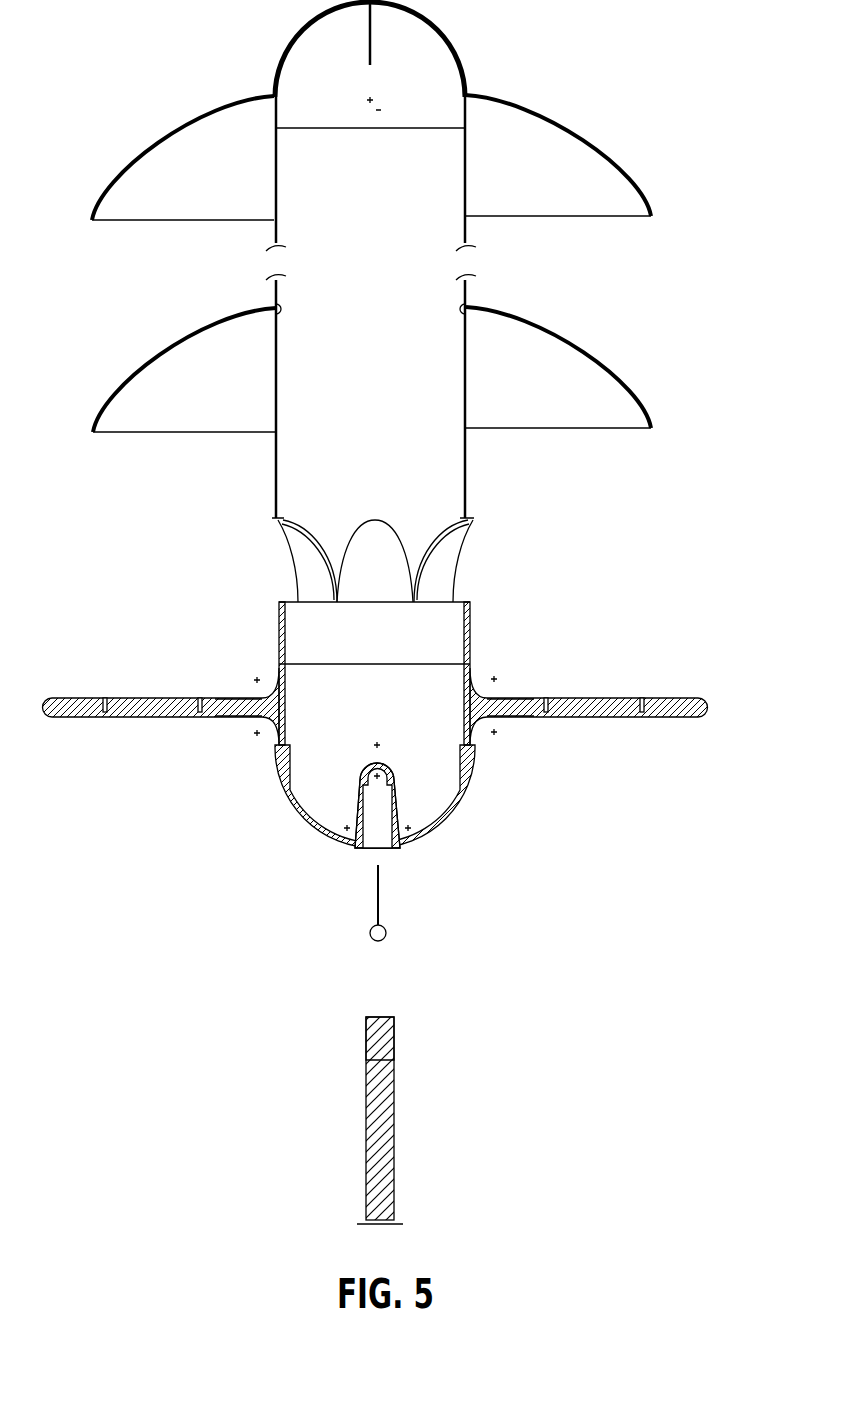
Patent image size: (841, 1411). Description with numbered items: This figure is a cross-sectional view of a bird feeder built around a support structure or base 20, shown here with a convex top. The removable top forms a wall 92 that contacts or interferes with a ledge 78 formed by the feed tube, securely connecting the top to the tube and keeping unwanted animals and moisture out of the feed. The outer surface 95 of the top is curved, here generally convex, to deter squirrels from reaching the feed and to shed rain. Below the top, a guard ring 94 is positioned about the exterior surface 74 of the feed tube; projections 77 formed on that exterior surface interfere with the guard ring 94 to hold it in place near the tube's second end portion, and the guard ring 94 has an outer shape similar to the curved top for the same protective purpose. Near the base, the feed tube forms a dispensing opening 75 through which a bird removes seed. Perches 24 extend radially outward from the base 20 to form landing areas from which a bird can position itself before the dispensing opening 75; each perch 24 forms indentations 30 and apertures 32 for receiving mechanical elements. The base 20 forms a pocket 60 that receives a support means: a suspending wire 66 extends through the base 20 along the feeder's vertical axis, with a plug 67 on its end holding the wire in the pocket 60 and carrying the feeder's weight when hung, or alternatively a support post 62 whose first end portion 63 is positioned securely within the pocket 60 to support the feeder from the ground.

The wall 92 is at (462, 82).
The ledge 78 is at (465, 118).
The outer surface 95 is at (618, 163).
The exterior surface 74 is at (466, 286).
The projections 77 is at (468, 305).
The guard ring 94 is at (618, 375).
The dispensing opening 75 is at (448, 568).
The base 20 is at (313, 787).
The perch 24 is at (682, 672).
The apertures 32 is at (615, 668).
The indentations 30 is at (540, 742).
The pocket 60 is at (378, 822).
The suspending wire 66 is at (380, 898).
The plug 67 is at (370, 938).
The support post 62 is at (388, 1170).
The first end portion 63 is at (390, 1048).